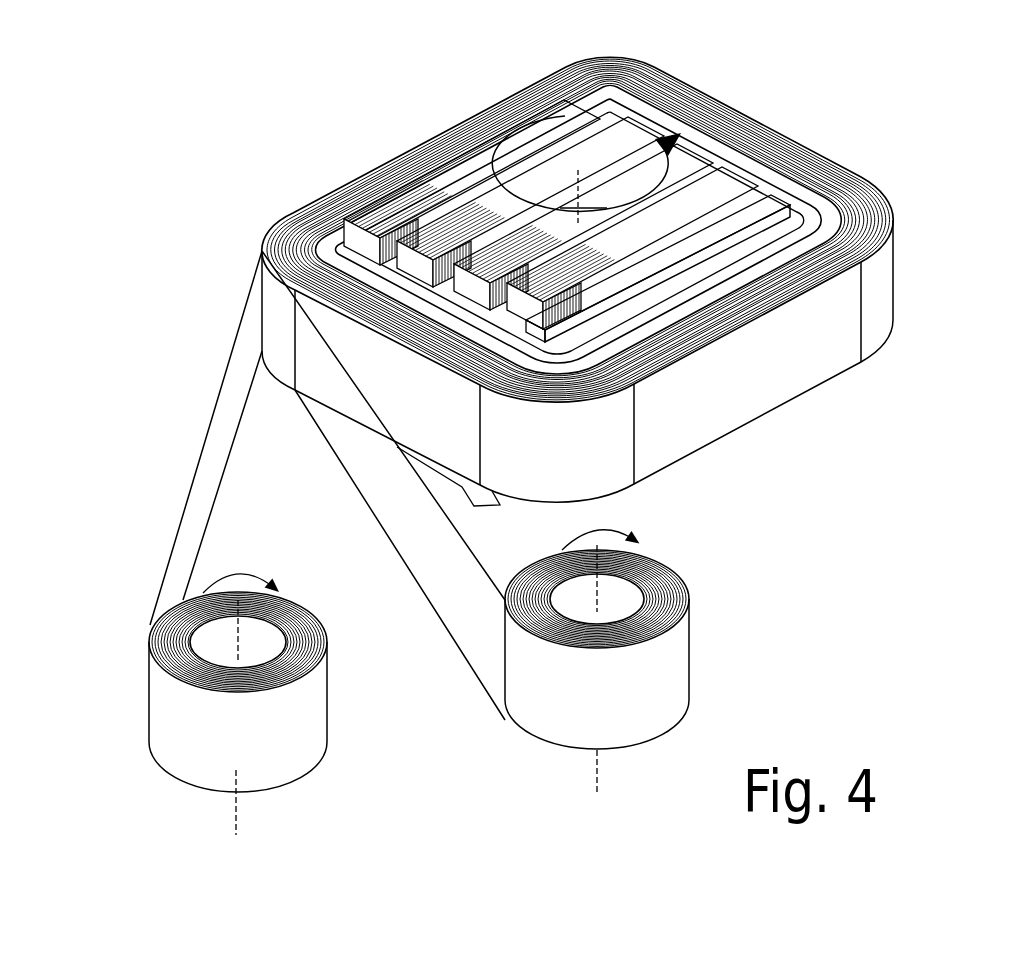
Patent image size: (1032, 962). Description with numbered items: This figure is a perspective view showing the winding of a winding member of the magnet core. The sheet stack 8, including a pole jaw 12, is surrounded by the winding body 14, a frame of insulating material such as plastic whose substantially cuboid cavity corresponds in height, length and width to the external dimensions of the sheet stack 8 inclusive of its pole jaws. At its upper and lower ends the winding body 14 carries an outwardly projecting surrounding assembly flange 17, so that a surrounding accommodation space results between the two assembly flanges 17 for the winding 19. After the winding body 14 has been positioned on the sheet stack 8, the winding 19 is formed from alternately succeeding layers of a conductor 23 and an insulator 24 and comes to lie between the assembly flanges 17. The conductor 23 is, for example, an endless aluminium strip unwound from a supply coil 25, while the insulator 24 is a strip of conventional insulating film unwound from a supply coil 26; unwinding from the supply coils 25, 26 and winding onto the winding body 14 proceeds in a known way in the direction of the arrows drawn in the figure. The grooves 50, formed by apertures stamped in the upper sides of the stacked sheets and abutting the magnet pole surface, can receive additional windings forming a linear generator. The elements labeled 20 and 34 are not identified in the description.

The sheet stack 8 is at (418, 186).
The pole jaw 12 is at (451, 10).
The winding body 14 is at (703, 163).
The assembly flange 17 is at (348, 247).
The winding 19 is at (300, 213).
The core stack 20 is at (281, 13).
The conductor 23 is at (170, 568).
The insulator 24 is at (470, 610).
The supply coil 25 is at (170, 655).
The supply coil 26 is at (680, 583).
The core segment 34 is at (343, 23).
The groove 50 is at (702, 252).